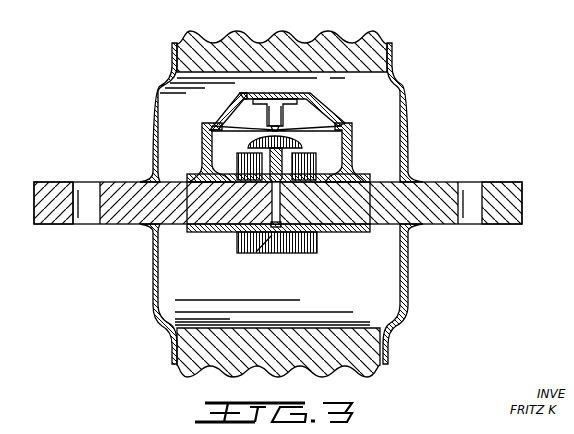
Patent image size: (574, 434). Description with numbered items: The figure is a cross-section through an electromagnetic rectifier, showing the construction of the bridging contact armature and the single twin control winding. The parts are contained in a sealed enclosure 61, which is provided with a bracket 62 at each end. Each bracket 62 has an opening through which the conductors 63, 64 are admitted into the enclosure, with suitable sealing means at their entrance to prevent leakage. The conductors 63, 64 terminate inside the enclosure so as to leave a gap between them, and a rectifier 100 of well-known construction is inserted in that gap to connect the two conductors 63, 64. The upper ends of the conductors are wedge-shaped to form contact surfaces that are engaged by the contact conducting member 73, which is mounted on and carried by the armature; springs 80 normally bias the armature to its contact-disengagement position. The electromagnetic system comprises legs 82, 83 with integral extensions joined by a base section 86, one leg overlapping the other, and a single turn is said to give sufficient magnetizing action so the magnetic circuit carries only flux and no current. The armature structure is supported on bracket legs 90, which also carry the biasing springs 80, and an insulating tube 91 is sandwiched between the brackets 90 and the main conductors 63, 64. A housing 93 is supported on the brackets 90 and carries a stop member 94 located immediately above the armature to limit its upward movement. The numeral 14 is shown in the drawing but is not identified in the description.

The stem 14 is at (259, 129).
The sealed enclosure 61 is at (380, 30).
The bracket 62 is at (408, 99).
The conductor 63 is at (70, 181).
The conductor 64 is at (522, 203).
The contact conducting member 73 is at (296, 168).
The spring 80 is at (328, 127).
The leg 82 is at (238, 166).
The leg 83 is at (318, 173).
The base section 86 is at (293, 249).
The bracket leg 90 is at (203, 137).
The insulating tube 91 is at (203, 233).
The housing 93 is at (248, 97).
The stop member 94 is at (292, 98).
The rectifier 100 is at (262, 246).